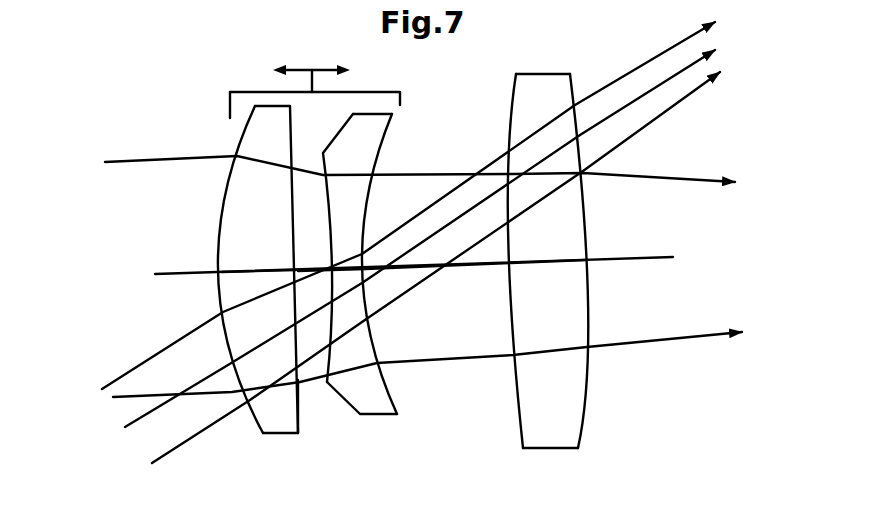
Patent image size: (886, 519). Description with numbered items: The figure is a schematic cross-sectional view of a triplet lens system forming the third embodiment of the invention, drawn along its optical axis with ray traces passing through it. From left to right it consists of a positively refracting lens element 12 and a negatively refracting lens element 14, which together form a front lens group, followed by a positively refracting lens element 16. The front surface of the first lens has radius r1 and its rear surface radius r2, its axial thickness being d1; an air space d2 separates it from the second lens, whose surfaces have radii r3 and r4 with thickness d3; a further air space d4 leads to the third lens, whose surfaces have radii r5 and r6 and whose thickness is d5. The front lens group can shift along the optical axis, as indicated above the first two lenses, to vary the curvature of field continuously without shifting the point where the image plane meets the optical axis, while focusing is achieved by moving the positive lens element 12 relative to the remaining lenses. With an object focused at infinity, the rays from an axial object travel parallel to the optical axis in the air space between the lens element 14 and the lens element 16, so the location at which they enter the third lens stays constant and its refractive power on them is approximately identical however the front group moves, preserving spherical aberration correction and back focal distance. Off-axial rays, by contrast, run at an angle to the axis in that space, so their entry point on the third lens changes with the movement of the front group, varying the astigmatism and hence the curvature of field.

The positively refracting lens element 12 is at (240, 292).
The negatively refracting lens element 14 is at (362, 293).
The positively refracting lens element 16 is at (543, 283).
The radius of curvature of the front surface of the first lens element r1 is at (220, 219).
The radius of curvature of the rear surface of the first lens element r2 is at (298, 395).
The radius of curvature of the front surface of the second lens element r3 is at (322, 153).
The radius of curvature of the rear surface of the second lens element r4 is at (380, 372).
The radius of curvature of the front surface of the third lens element r5 is at (514, 108).
The radius of curvature of the rear surface of the third lens element r6 is at (587, 404).
The axial thickness of the first lens element d1 is at (247, 273).
The axial air space between the first and second lens elements d2 is at (303, 274).
The axial thickness of the second lens element d3 is at (347, 268).
The axial air space between the second and third lens elements d4 is at (460, 263).
The axial thickness of the third lens element d5 is at (544, 263).